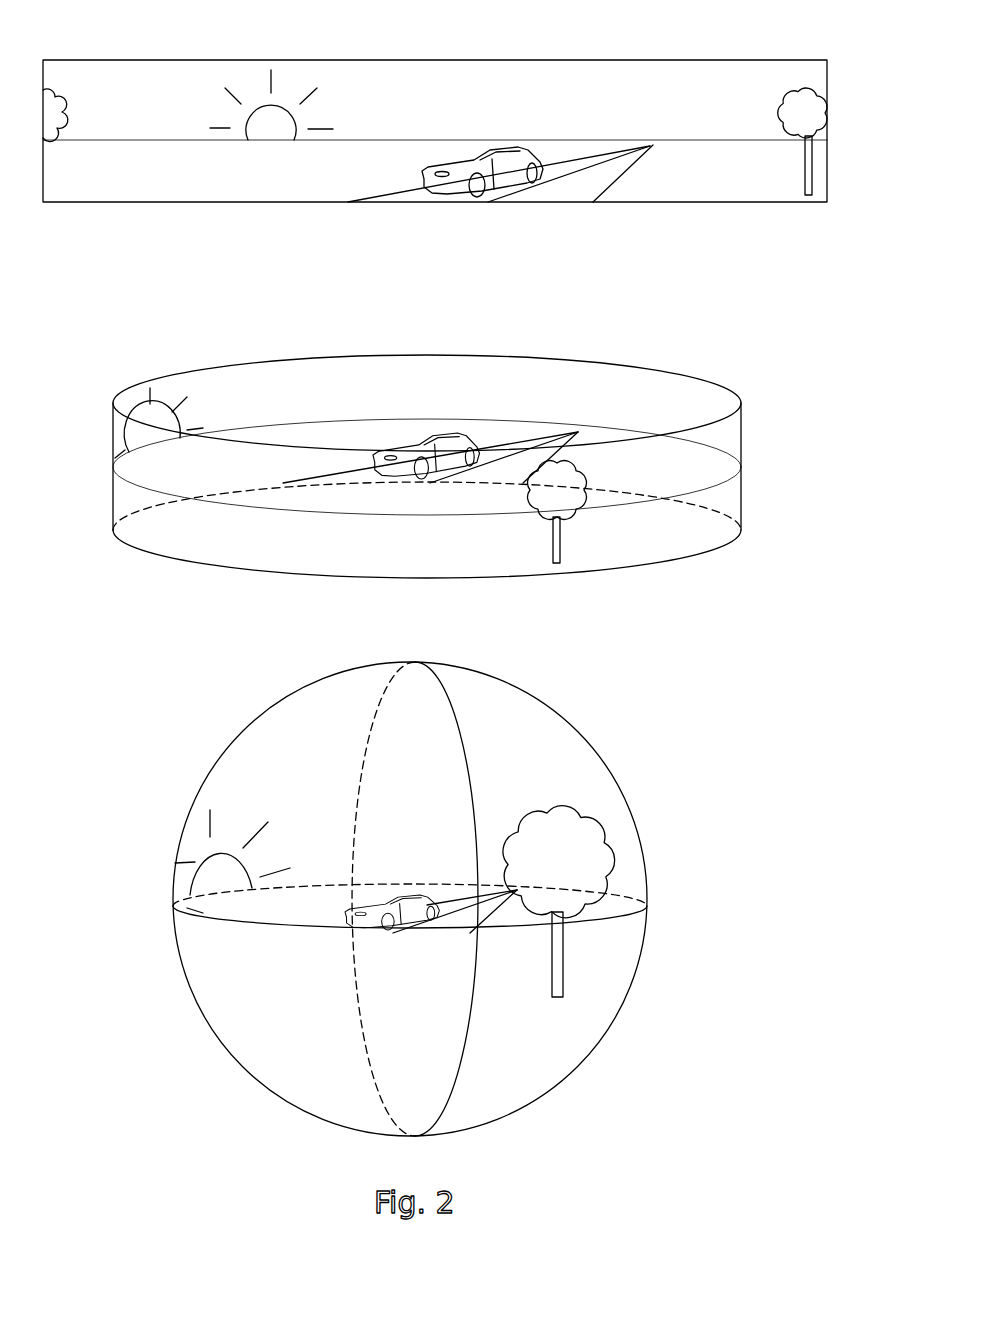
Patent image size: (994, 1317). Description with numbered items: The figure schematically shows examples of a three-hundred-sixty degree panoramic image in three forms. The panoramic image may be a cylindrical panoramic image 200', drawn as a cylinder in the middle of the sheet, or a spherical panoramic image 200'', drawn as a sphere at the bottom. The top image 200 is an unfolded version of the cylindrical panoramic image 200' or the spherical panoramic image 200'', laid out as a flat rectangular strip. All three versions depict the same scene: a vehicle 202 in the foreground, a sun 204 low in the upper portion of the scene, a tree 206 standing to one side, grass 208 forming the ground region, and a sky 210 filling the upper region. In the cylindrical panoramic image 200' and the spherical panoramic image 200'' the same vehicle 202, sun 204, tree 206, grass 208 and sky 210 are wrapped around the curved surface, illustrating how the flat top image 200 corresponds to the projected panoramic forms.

The top image 200 is at (435, 177).
The vehicle 202 is at (457, 193).
The sun 204 is at (282, 128).
The tree 206 is at (795, 90).
The grass 208 is at (163, 173).
The sky 210 is at (553, 93).
The cylindrical panoramic image 200' is at (428, 502).
The spherical panoramic image 200'' is at (444, 899).